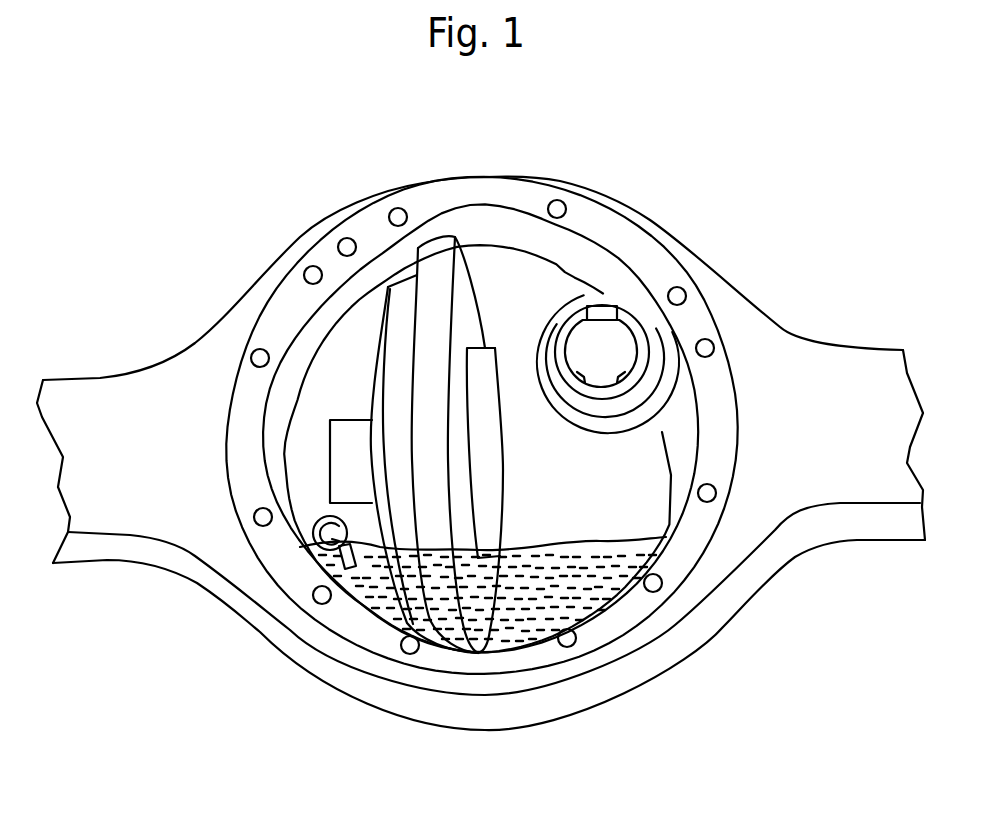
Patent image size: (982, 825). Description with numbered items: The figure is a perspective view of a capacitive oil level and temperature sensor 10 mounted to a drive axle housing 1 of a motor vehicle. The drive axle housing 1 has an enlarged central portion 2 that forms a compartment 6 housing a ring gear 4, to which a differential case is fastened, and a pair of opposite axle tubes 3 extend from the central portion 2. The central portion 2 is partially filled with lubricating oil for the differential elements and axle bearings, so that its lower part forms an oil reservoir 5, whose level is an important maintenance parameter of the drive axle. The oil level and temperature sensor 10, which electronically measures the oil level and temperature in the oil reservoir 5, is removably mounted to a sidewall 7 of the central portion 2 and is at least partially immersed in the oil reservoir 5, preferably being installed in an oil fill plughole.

The drive axle housing 1 is at (737, 193).
The central portion 2 is at (433, 197).
The axle tubes 3 is at (105, 553).
The ring gear 4 is at (497, 491).
The oil reservoir 5 is at (596, 547).
The compartment 6 is at (506, 285).
The sidewall 7 is at (348, 372).
The oil level and temperature sensor 10 is at (320, 512).